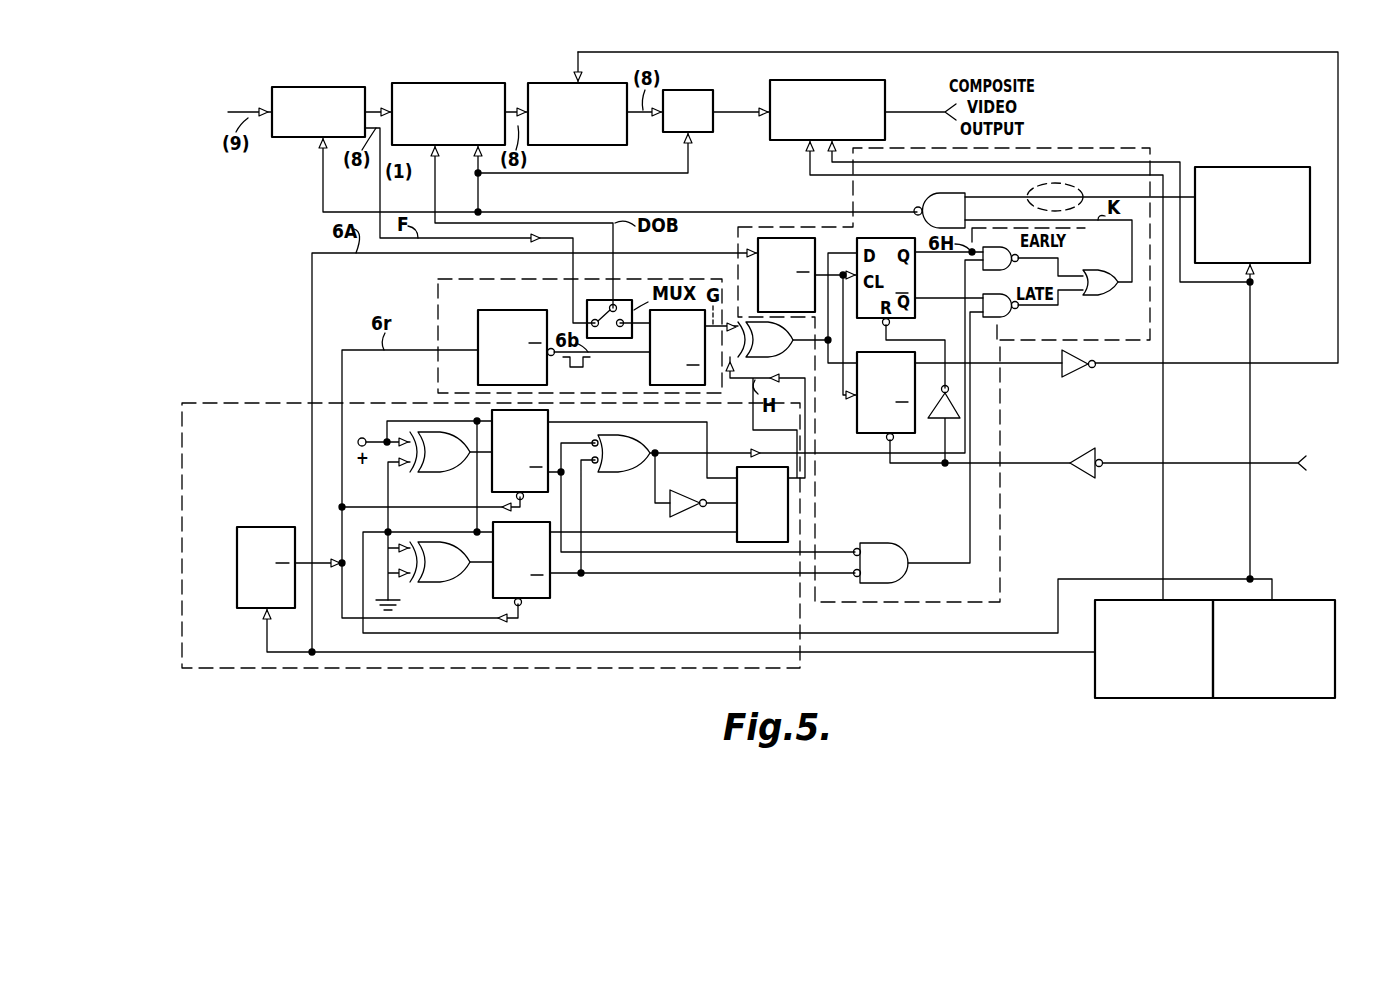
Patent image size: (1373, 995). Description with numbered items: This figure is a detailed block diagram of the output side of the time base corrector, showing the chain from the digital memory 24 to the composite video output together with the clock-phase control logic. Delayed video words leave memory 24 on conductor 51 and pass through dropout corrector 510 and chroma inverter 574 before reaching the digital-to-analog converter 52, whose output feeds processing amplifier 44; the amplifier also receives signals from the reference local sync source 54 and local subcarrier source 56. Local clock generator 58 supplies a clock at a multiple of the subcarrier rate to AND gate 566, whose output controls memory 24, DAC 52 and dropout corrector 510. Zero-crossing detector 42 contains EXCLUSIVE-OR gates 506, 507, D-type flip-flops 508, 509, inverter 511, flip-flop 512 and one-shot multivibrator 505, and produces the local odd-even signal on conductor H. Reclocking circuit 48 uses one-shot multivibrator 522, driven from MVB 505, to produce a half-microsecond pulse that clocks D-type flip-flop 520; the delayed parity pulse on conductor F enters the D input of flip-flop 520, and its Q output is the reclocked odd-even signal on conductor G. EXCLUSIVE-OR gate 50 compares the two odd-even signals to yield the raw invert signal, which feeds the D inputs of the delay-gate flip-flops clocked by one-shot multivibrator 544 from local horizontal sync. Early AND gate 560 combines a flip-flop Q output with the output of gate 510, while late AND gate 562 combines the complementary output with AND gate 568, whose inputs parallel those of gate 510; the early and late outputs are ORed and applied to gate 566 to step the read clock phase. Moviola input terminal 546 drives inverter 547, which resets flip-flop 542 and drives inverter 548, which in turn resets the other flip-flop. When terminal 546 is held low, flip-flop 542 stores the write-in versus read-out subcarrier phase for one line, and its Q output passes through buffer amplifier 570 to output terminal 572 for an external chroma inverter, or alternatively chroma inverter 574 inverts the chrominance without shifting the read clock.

The digital memory 24 is at (318, 87).
The conductor 51 is at (378, 108).
The dropout corrector 510 is at (445, 83).
The chroma inverter 574 is at (555, 83).
The digital-to-analog converter 52 is at (702, 86).
The processing amplifier 44 is at (836, 80).
The local clock generator 58 is at (1250, 167).
The AND gate 566 is at (916, 204).
The local sync signal source 54 is at (1075, 207).
The one-shot multivibrator 544 is at (780, 238).
The early AND gate 560 is at (983, 254).
The late AND gate 562 is at (1022, 308).
The D-type flip-flop 542 is at (872, 352).
The inverter 548 is at (935, 425).
The buffer amplifier 570 is at (1083, 376).
The inverter 547 is at (1077, 448).
The Moviola input terminal 546 is at (1298, 462).
The output terminal 572 is at (1284, 363).
The local subcarrier reference source 56 is at (1300, 600).
The AND gate 568 is at (900, 548).
The JK flip-flop 512 is at (788, 505).
The inverter 511 is at (699, 492).
The D-type flip-flop 508 is at (548, 410).
The D-type flip-flop 509 is at (553, 590).
The EXCLUSIVE-OR gate 506 is at (462, 470).
The EXCLUSIVE-OR gate 507 is at (463, 542).
The one-shot multivibrator 505 is at (264, 527).
The zero-crossing detector 42 is at (252, 403).
The reclocking circuit 48 is at (438, 298).
The one-shot multivibrator 522 is at (520, 310).
The D-type flip-flop 520 is at (650, 374).
The EXCLUSIVE-OR gate 50 is at (772, 356).